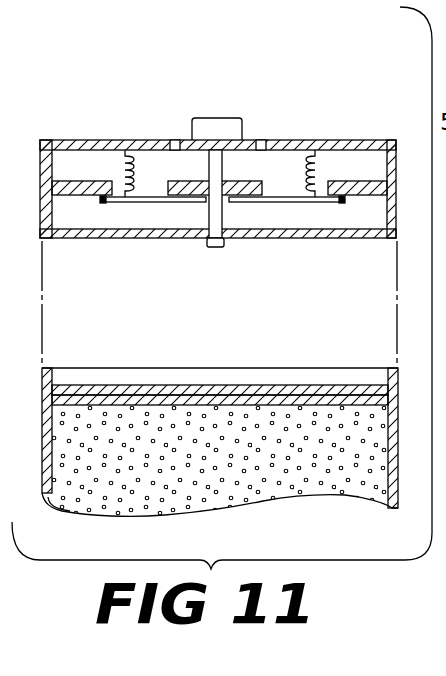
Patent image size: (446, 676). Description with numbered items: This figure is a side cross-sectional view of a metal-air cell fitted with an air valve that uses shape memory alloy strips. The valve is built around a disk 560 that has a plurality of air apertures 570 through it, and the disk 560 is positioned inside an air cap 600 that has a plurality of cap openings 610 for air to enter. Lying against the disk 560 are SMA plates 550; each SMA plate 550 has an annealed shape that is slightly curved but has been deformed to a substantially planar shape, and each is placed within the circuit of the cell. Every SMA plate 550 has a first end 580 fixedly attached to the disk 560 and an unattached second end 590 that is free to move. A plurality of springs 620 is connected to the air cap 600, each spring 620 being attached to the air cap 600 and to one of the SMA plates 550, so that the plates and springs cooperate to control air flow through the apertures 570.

The disk 560 is at (67, 142).
The air cap 600 is at (123, 139).
The cap openings 610 is at (258, 140).
The springs 620 is at (118, 172).
The air apertures 570 is at (155, 179).
The first end 580 is at (206, 206).
The SMA plate 550 is at (146, 204).
The second end 590 is at (102, 204).